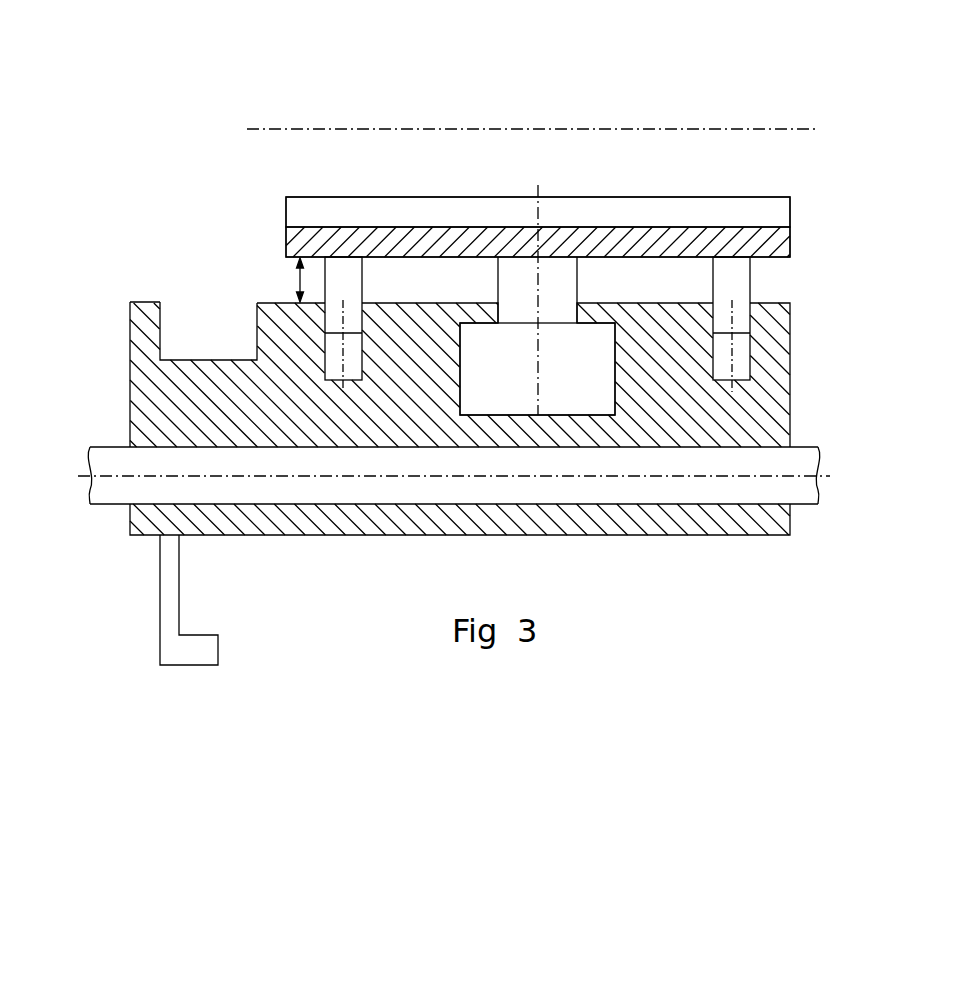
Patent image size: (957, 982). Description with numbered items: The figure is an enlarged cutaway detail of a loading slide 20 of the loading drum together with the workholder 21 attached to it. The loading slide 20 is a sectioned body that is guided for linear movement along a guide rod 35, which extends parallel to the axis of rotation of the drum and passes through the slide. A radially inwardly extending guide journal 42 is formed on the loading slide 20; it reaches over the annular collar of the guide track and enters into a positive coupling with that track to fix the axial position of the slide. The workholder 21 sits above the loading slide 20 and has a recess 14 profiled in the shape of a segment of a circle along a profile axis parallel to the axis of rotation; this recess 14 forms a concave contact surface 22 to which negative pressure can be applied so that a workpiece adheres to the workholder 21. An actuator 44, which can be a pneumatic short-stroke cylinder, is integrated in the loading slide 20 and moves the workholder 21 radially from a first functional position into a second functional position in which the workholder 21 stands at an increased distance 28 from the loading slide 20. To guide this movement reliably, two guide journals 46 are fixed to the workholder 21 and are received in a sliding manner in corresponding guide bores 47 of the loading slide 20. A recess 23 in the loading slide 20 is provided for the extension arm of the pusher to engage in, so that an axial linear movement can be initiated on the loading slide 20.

The recess 14 is at (718, 216).
The loading slide 20 is at (775, 415).
The workholder 21 is at (325, 232).
The contact surface 22 is at (460, 227).
The recess 23 is at (200, 358).
The distance 28 is at (287, 258).
The guide rod 35 is at (797, 492).
The guide journal 42 is at (182, 653).
The actuator 44 is at (597, 343).
The guide journal 46 is at (740, 280).
The guide bore 47 is at (325, 360).